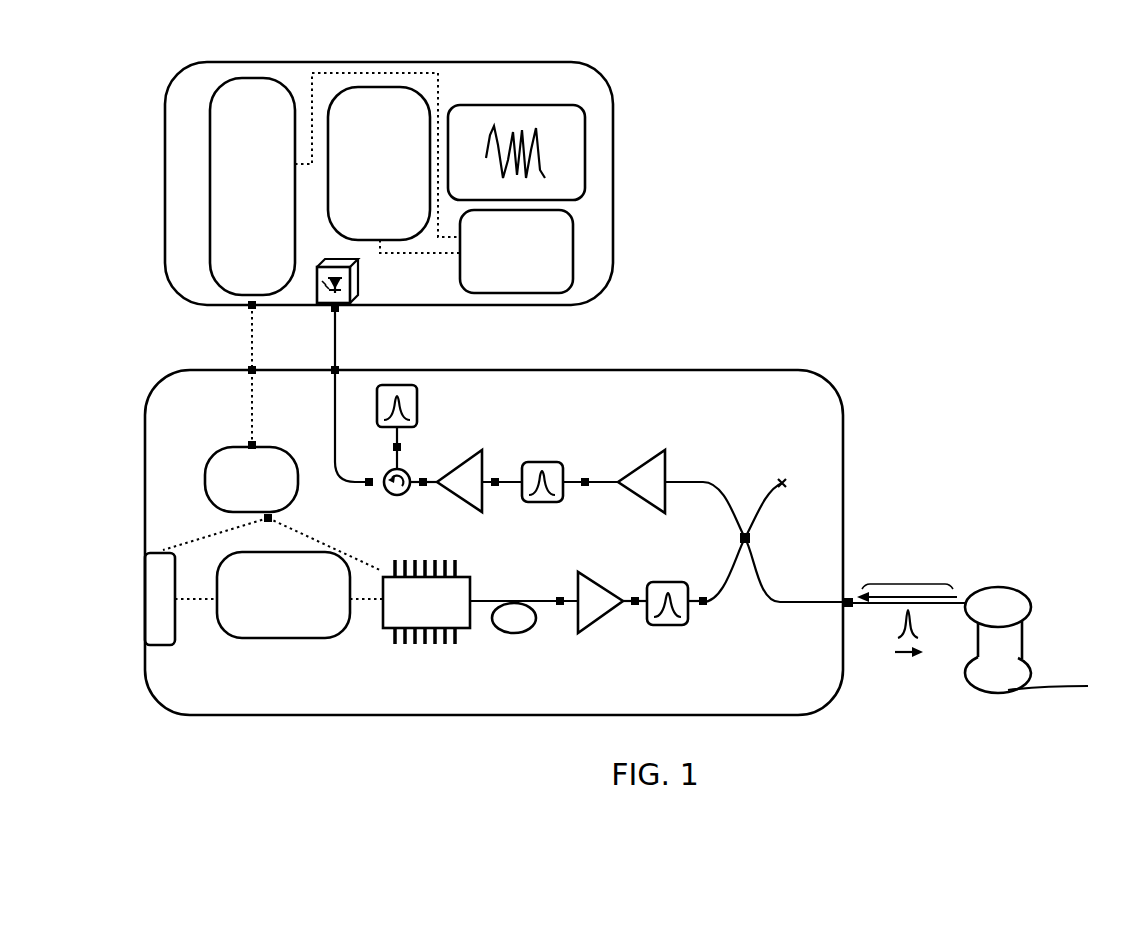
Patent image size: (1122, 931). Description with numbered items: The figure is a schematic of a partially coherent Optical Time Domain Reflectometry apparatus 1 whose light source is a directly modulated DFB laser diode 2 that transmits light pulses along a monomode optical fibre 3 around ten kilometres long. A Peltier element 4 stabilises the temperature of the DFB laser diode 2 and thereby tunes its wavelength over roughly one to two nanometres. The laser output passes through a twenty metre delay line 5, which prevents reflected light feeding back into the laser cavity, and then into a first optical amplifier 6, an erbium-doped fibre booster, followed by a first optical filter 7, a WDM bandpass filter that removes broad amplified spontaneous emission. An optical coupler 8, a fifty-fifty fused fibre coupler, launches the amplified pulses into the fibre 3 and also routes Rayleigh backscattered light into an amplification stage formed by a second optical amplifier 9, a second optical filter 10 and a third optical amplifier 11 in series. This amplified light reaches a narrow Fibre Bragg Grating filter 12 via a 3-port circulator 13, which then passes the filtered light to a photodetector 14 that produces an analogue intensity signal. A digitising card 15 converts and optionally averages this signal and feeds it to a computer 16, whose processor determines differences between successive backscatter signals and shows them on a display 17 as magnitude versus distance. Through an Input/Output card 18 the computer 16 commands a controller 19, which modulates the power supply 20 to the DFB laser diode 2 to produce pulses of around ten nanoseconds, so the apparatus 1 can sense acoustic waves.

The partially coherent Optical Time Domain Reflectometry apparatus 1 is at (810, 195).
The DFB laser diode 2 is at (385, 632).
The monomode optical fibre 3 is at (1046, 575).
The Peltier element 4 is at (283, 638).
The delay line 5 is at (533, 627).
The first optical amplifier 6 is at (603, 587).
The first optical filter 7 is at (688, 622).
The optical coupler 8 is at (768, 458).
The second optical amplifier 9 is at (665, 452).
The second optical filter 10 is at (543, 462).
The third optical amplifier 11 is at (482, 458).
The Fibre Bragg Grating filter 12 is at (398, 385).
The 3-port circulator 13 is at (385, 474).
The photodetector 14 is at (327, 307).
The digitising card 15 is at (377, 87).
The computer 16 is at (573, 255).
The display 17 is at (587, 157).
The Input/Output card 18 is at (252, 78).
The controller 19 is at (204, 482).
The power supply 20 is at (162, 647).